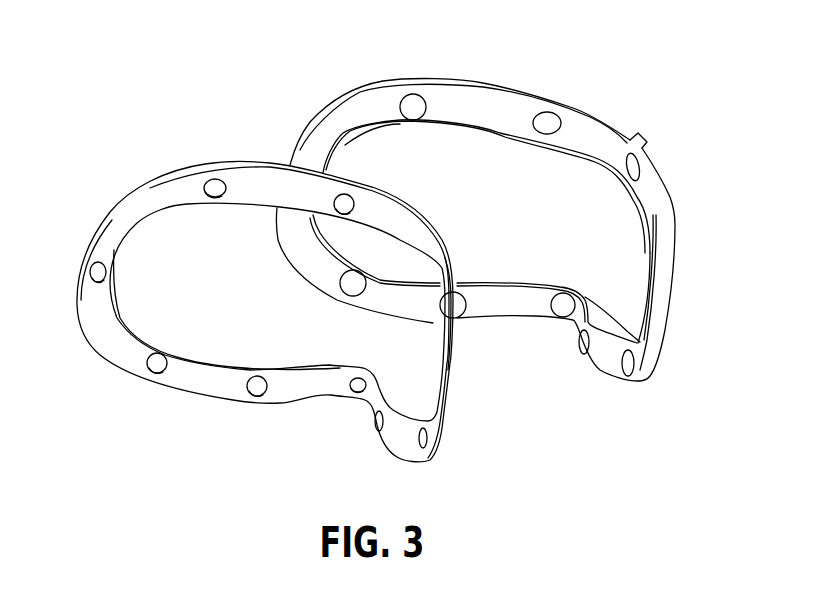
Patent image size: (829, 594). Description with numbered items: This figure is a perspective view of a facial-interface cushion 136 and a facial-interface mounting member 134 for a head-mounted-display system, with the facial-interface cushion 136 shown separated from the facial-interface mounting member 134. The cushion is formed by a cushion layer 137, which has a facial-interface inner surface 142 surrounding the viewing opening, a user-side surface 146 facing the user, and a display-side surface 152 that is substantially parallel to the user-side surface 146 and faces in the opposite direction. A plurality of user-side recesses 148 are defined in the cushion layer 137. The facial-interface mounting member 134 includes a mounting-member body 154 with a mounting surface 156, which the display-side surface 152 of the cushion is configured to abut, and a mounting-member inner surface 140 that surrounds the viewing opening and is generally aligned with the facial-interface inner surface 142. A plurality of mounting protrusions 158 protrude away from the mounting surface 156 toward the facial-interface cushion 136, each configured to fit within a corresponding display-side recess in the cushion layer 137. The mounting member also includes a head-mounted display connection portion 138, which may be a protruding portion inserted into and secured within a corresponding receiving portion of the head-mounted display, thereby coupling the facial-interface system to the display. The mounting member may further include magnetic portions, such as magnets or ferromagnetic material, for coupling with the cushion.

The facial-interface mounting member 134 is at (510, 232).
The facial-interface cushion 136 is at (255, 300).
The cushion layer 137 is at (121, 375).
The head-mounted display connection portion 138 is at (674, 196).
The mounting-member inner surface 140 is at (571, 283).
The facial-interface inner surface 142 is at (118, 303).
The user-side surface 146 is at (100, 330).
The user-side recesses 148 is at (209, 181).
The display-side surface 152 is at (457, 350).
The mounting-member body 154 is at (498, 92).
The mounting surface 156 is at (353, 120).
The mounting protrusions 158 is at (427, 97).